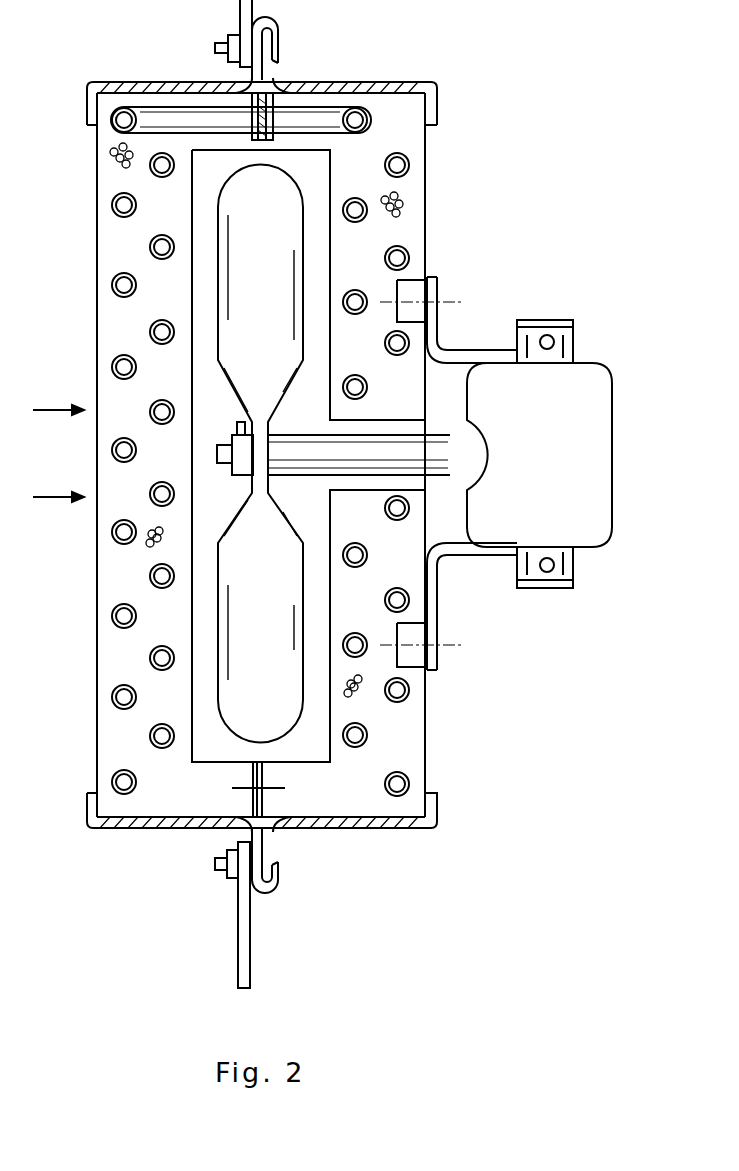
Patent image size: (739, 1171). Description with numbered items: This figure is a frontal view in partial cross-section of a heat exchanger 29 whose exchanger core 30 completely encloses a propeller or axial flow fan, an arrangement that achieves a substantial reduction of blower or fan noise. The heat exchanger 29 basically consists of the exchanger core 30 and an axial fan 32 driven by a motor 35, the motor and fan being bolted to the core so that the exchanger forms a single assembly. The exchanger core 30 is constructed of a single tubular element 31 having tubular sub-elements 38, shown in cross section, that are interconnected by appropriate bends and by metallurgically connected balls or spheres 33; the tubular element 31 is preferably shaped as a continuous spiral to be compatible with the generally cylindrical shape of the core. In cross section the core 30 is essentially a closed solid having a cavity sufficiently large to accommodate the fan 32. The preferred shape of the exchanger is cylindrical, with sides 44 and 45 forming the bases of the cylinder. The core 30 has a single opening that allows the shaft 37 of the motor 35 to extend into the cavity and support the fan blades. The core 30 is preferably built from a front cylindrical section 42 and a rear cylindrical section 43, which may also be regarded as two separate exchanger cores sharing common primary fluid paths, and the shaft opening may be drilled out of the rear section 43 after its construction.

The heat exchanger 29 is at (96, 744).
The exchanger core 30 is at (113, 573).
The tubular element 31 is at (125, 110).
The axial fan 32 is at (272, 262).
The balls or spheres 33 is at (115, 160).
The motor 35 is at (552, 464).
The shaft 37 is at (333, 474).
The tubular sub-elements 38 is at (162, 332).
The front cylindrical section 42 is at (95, 523).
The rear cylindrical section 43 is at (426, 738).
The side 44 is at (95, 672).
The side 45 is at (436, 794).